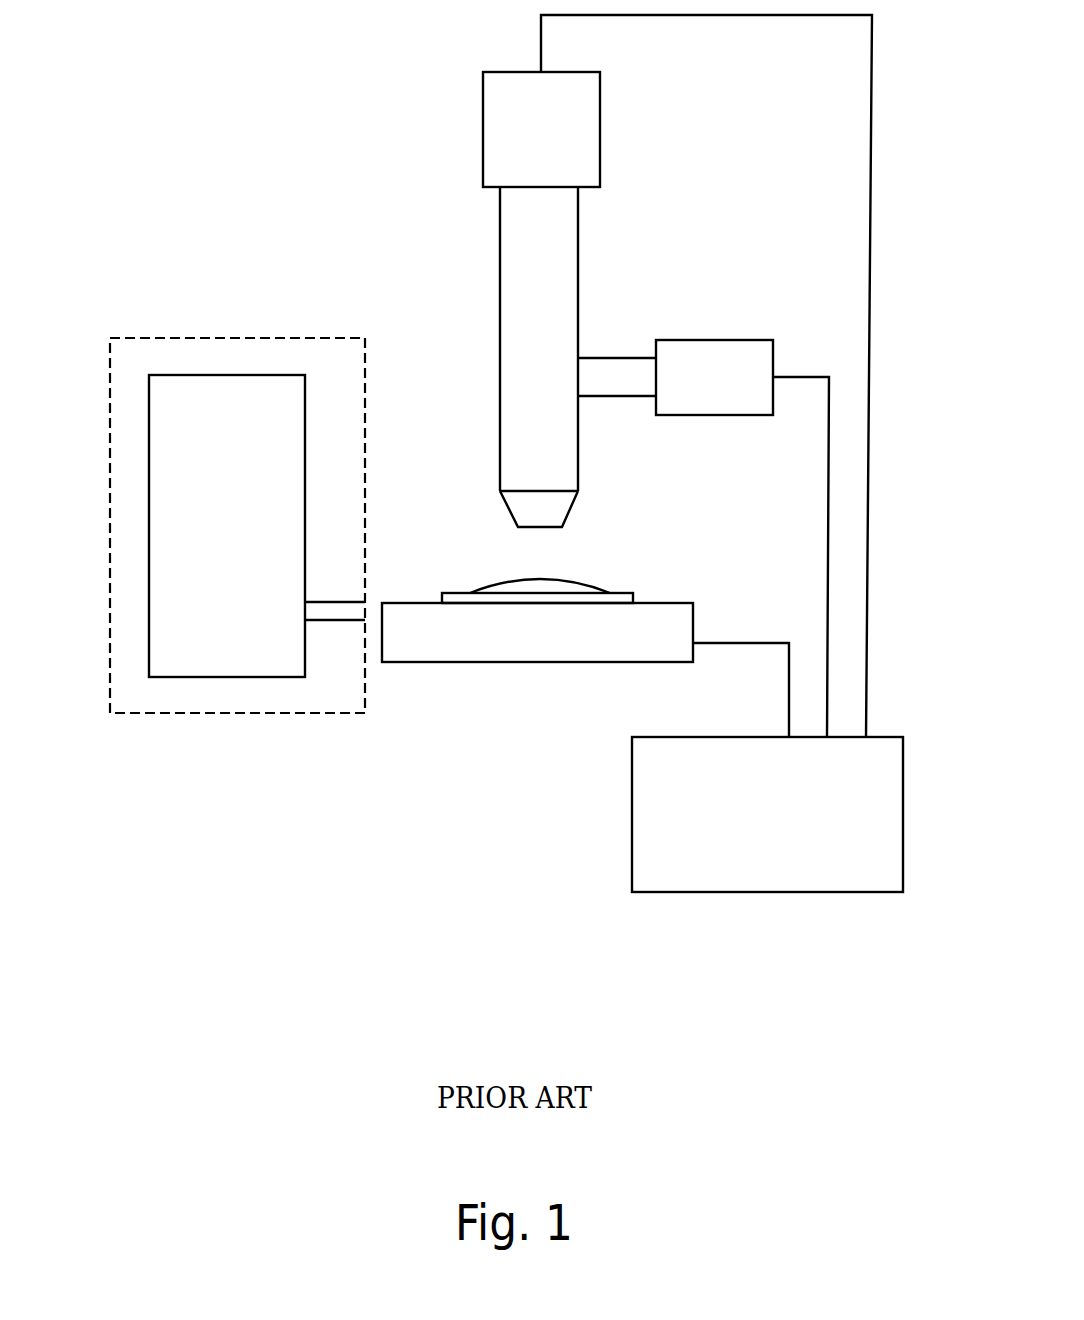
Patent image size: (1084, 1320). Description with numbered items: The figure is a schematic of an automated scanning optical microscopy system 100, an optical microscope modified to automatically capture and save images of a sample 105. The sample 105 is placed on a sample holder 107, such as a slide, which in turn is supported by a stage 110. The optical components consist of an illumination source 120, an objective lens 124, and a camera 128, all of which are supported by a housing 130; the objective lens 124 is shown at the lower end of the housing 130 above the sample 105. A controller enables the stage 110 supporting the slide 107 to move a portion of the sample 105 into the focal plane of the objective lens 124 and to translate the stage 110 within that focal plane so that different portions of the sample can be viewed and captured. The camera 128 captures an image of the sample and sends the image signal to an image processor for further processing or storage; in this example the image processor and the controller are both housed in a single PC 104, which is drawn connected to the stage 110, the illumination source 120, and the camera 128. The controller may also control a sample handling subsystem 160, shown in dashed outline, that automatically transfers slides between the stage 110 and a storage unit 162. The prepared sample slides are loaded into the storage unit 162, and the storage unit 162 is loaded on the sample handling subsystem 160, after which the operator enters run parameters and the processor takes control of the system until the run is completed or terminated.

The automated scanning optical microscopy system 100 is at (237, 63).
The PC 104 is at (722, 453).
The sample 105 is at (517, 577).
The sample holder 107 is at (633, 597).
The stage 110 is at (532, 662).
The illumination source 120 is at (703, 538).
The objective lens 124 is at (567, 513).
The camera 128 is at (541, 129).
The housing 130 is at (500, 262).
The sample handling subsystem 160 is at (237, 507).
The storage unit 162 is at (257, 526).